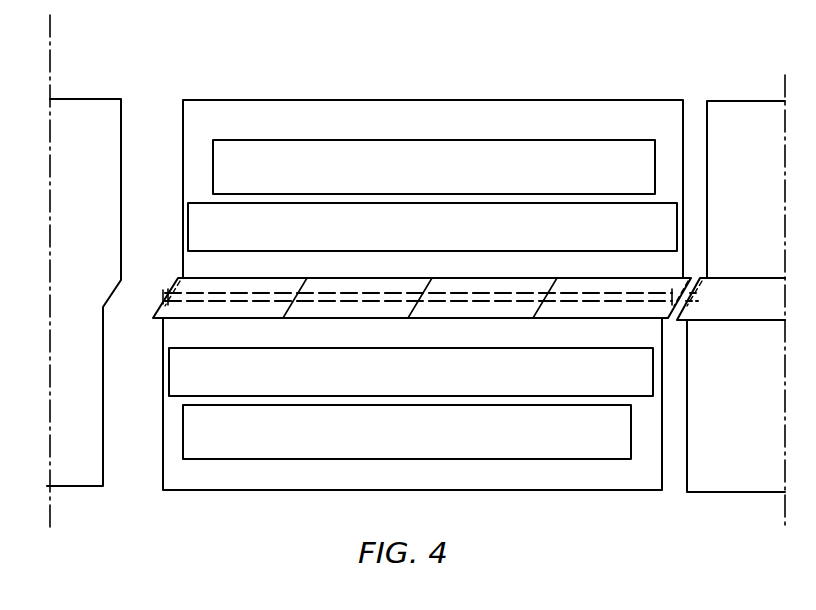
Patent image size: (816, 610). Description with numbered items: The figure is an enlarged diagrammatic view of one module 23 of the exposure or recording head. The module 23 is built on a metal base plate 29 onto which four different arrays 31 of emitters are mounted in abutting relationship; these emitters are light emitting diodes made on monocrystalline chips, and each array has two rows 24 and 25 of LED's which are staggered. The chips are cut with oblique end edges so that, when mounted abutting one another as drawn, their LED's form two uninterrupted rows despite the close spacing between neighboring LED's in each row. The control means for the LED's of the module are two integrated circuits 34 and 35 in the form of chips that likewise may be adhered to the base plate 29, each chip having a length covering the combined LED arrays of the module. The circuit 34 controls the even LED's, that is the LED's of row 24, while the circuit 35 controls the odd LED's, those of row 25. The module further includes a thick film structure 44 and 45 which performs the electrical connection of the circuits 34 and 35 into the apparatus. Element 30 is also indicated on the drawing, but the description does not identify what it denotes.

The module 23 is at (309, 82).
The metal base plate 29 is at (412, 112).
The thick film structure 44 is at (498, 158).
The integrated circuit 34 is at (632, 213).
The left side wall 30 is at (112, 288).
The arrays of emitters 31 is at (363, 287).
The row of emitters 24 is at (207, 292).
The row of emitters 25 is at (182, 300).
The thick film structure 45 is at (517, 445).
The integrated circuit 35 is at (643, 387).